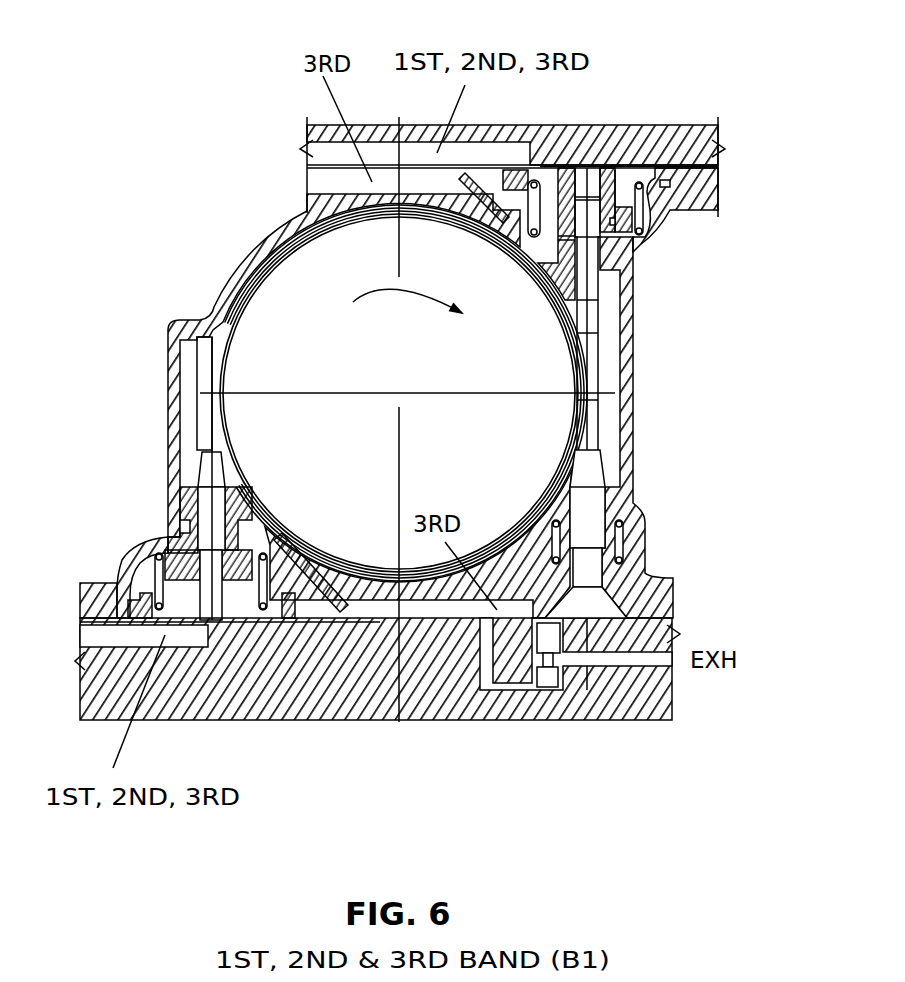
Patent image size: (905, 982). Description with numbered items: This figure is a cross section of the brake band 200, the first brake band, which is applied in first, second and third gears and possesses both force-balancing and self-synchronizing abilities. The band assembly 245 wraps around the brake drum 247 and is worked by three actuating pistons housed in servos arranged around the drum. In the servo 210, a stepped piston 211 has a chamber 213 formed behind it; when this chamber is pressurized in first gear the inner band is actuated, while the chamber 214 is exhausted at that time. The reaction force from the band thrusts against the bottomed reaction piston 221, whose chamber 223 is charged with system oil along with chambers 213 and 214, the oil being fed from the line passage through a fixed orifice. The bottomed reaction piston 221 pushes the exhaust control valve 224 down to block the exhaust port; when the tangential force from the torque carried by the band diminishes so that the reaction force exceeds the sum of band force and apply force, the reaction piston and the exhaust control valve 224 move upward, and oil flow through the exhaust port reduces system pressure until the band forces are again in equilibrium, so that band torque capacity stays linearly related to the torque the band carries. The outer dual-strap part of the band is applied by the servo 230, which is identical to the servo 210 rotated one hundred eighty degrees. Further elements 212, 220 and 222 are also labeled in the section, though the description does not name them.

The brake band 200 is at (195, 200).
The servo 210 is at (680, 262).
The stepped piston 211 is at (620, 167).
The apply pin 212 is at (595, 282).
The chamber 213 is at (647, 167).
The chamber 214 is at (655, 210).
The second servo housing 220 is at (715, 577).
The bottomed reaction piston 221 is at (643, 560).
The servo piston 222 is at (593, 472).
The chamber 223 is at (603, 602).
The exhaust control valve 224 is at (553, 655).
The servo 230 is at (123, 528).
The band assembly 245 is at (280, 257).
The brake drum 247 is at (262, 313).